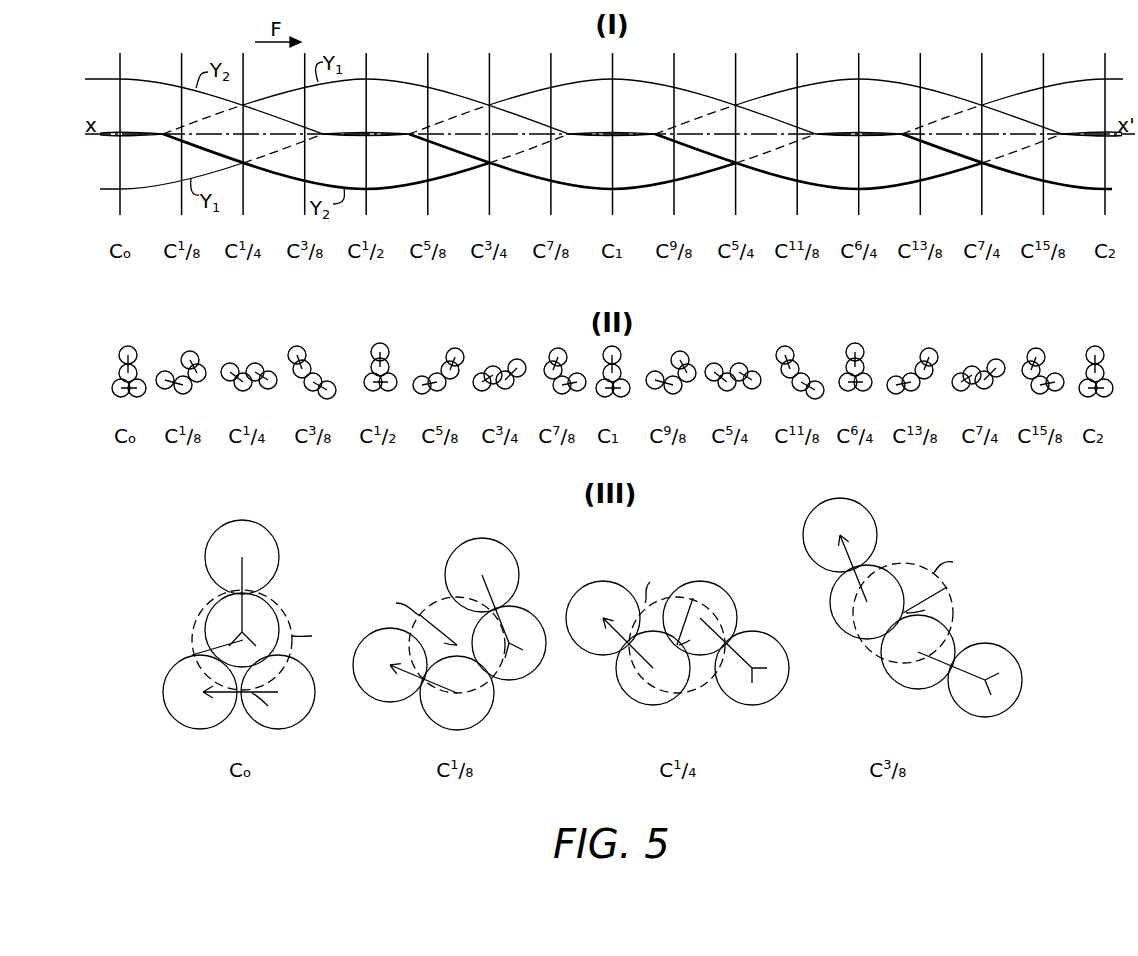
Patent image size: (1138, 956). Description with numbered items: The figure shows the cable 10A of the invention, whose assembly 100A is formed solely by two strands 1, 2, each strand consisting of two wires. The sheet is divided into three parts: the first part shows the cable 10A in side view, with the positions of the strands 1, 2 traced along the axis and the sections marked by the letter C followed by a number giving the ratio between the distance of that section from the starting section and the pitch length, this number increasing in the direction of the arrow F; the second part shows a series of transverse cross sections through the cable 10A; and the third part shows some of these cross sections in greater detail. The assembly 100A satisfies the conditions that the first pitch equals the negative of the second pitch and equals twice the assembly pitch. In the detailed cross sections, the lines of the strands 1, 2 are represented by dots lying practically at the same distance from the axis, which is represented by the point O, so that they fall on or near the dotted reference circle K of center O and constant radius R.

The strand 1 is at (160, 186).
The strand 2 is at (156, 80).
The cable 10A is at (433, 82).
The assembly 100A is at (500, 103).